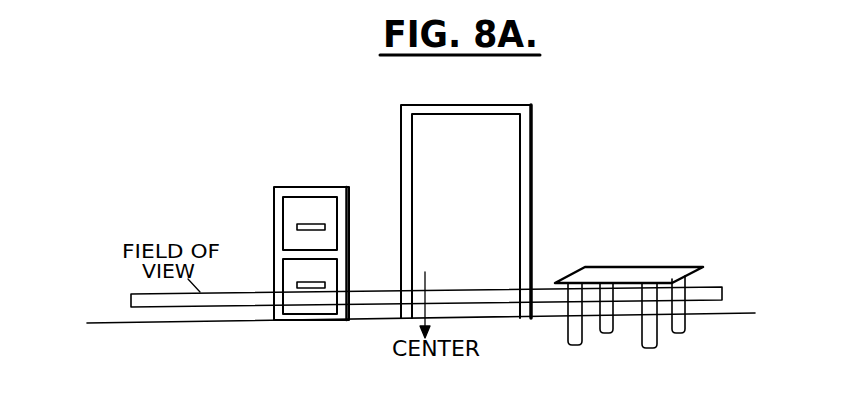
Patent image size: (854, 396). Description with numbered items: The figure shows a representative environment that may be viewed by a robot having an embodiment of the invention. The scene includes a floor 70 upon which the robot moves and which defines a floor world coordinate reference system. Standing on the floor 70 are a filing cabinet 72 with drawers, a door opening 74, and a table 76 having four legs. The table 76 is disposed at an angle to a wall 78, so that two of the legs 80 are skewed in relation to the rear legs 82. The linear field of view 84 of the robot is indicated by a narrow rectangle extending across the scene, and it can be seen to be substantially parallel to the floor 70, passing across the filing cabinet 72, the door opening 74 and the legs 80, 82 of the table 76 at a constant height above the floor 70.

The floor 70 is at (216, 353).
The filing cabinet 72 is at (274, 196).
The door opening 74 is at (401, 123).
The table 76 is at (645, 307).
The wall 78 is at (583, 158).
The legs 80 is at (650, 349).
The rear legs 82 is at (613, 331).
The linear field of view 84 is at (131, 300).